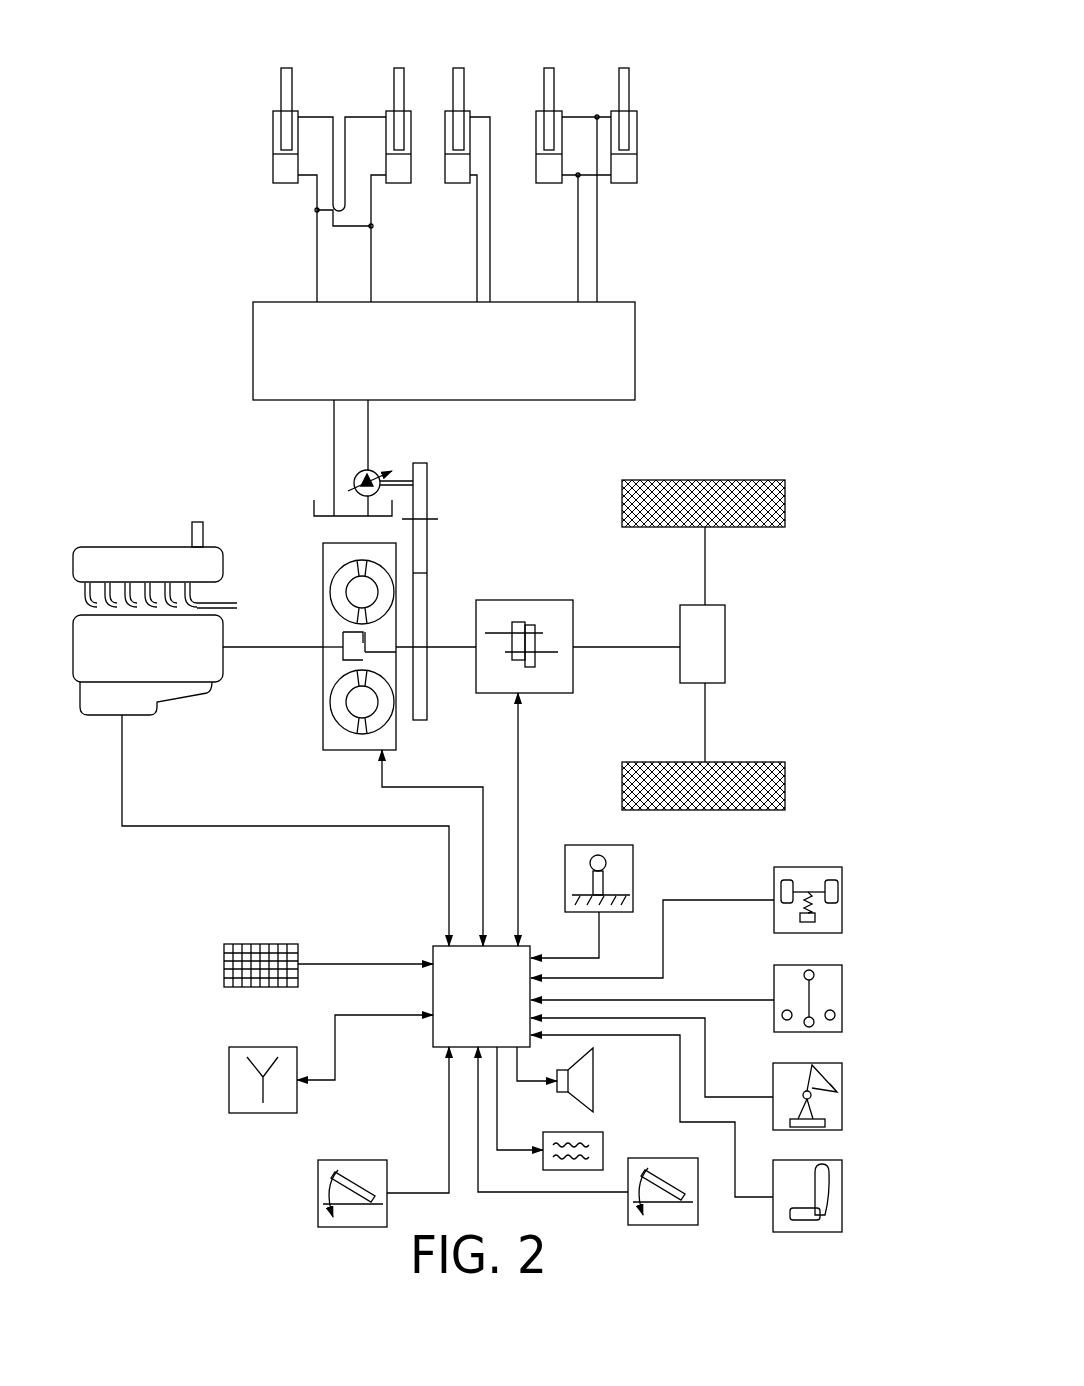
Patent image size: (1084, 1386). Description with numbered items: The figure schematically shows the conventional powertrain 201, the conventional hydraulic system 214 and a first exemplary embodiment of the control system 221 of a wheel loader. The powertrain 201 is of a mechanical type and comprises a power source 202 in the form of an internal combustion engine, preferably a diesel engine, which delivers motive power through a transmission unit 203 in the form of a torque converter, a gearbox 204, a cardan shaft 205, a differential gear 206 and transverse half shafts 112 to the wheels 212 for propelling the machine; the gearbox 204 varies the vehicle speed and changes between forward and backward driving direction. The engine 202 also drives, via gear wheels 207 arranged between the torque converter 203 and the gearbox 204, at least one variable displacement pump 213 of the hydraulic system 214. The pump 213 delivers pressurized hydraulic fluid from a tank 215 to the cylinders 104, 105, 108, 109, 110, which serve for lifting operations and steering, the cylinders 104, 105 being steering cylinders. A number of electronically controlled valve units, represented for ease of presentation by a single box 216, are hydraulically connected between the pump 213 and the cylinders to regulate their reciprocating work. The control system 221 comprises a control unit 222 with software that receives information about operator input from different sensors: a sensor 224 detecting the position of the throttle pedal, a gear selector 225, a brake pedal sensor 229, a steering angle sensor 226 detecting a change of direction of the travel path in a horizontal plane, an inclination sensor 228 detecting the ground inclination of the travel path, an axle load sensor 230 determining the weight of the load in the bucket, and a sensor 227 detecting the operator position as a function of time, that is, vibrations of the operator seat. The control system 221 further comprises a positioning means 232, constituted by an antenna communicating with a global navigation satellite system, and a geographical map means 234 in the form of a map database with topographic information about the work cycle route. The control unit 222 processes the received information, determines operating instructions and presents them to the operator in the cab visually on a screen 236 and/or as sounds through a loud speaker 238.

The steering cylinder 104 is at (273, 103).
The steering cylinder 105 is at (390, 100).
The cylinder 108 is at (548, 187).
The cylinder 109 is at (612, 100).
The cylinder 110 is at (472, 100).
The transverse half shafts 112 is at (705, 567).
The powertrain 201 is at (547, 488).
The power source 202 is at (93, 557).
The transmission unit 203 is at (332, 742).
The gearbox 204 is at (520, 600).
The cardan shaft 205 is at (643, 647).
The differential gear 206 is at (725, 645).
The gear wheels 207 is at (433, 562).
The wheels 212 is at (728, 480).
The variable displacement pump 213 is at (353, 482).
The hydraulic system 214 is at (670, 233).
The tank 215 is at (313, 508).
The valve units 216 is at (635, 352).
The control system 221 is at (328, 1123).
The control unit 222 is at (433, 953).
The throttle pedal sensor 224 is at (665, 1225).
The gear selector 225 is at (633, 877).
The steering angle sensor 226 is at (842, 1093).
The operator position sensor 227 is at (842, 1193).
The inclination sensor 228 is at (842, 997).
The brake pedal sensor 229 is at (352, 1227).
The axle load sensor 230 is at (842, 900).
The positioning means 232 is at (229, 1080).
The geographical map means 234 is at (224, 967).
The screen 236 is at (595, 1132).
The loud speaker 238 is at (593, 1080).